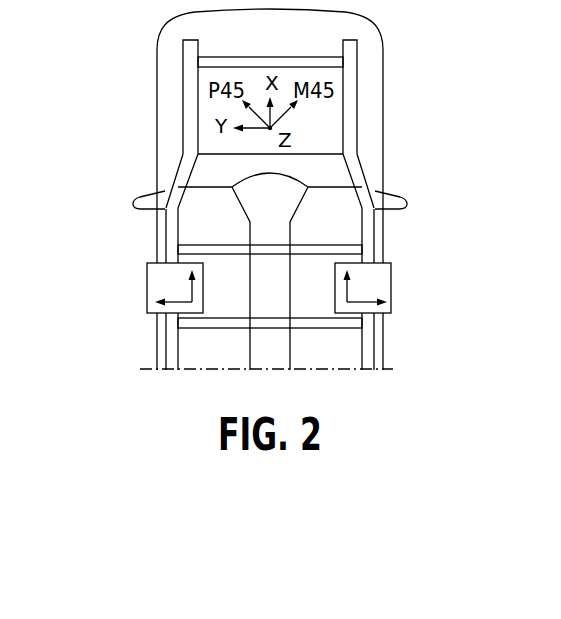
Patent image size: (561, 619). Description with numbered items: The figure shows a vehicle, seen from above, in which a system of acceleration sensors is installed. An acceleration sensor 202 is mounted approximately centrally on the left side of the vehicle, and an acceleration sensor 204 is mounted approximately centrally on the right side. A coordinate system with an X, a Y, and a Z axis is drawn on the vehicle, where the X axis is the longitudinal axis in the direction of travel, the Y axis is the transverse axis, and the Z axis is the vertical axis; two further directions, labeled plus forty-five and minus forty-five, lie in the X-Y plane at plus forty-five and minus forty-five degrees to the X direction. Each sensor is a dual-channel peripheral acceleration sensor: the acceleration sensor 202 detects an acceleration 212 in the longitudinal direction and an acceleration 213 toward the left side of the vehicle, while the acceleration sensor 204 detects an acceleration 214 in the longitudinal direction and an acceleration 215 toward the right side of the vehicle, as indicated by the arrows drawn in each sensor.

The acceleration sensor 202 is at (145, 292).
The acceleration sensor 204 is at (391, 292).
The acceleration 212 is at (203, 291).
The acceleration 213 is at (175, 303).
The acceleration 214 is at (337, 291).
The acceleration 215 is at (365, 303).